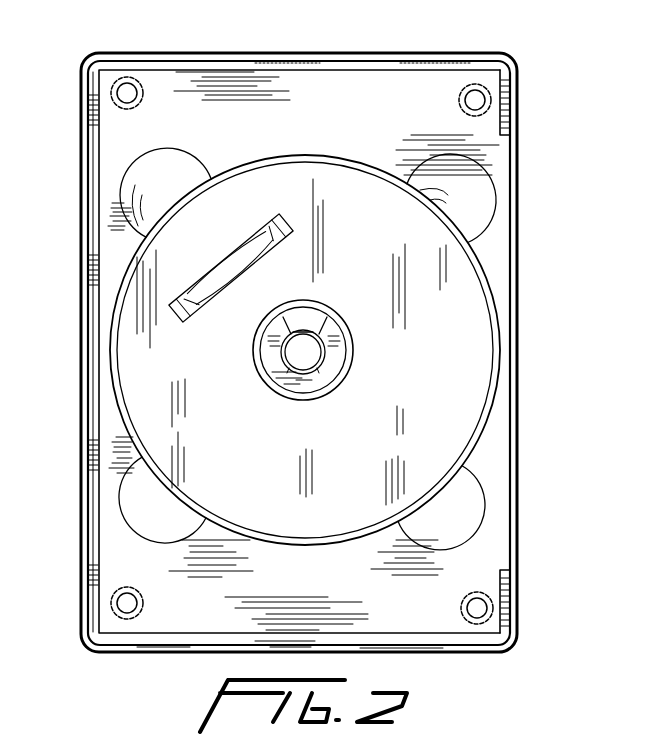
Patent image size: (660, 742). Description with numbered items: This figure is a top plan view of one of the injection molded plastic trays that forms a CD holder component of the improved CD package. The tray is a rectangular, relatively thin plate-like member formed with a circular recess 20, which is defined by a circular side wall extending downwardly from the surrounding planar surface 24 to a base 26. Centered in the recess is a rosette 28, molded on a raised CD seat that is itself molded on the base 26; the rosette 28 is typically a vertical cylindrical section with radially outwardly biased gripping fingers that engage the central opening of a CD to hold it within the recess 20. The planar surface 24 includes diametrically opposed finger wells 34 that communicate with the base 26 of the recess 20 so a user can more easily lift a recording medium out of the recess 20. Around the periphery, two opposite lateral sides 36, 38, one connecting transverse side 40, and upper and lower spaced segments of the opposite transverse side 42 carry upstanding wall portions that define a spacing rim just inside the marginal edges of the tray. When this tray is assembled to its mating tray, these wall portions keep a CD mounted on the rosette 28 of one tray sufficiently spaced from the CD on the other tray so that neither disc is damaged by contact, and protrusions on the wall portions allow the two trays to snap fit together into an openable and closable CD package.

The circular recess 20 is at (350, 350).
The planar surface 24 is at (427, 127).
The base 26 is at (434, 411).
The rosette 28 is at (316, 378).
The finger wells 34 is at (137, 183).
The lateral side 36 is at (443, 648).
The lateral side 38 is at (332, 62).
The connecting transverse side 40 is at (80, 233).
The opposite transverse side 42 is at (518, 103).